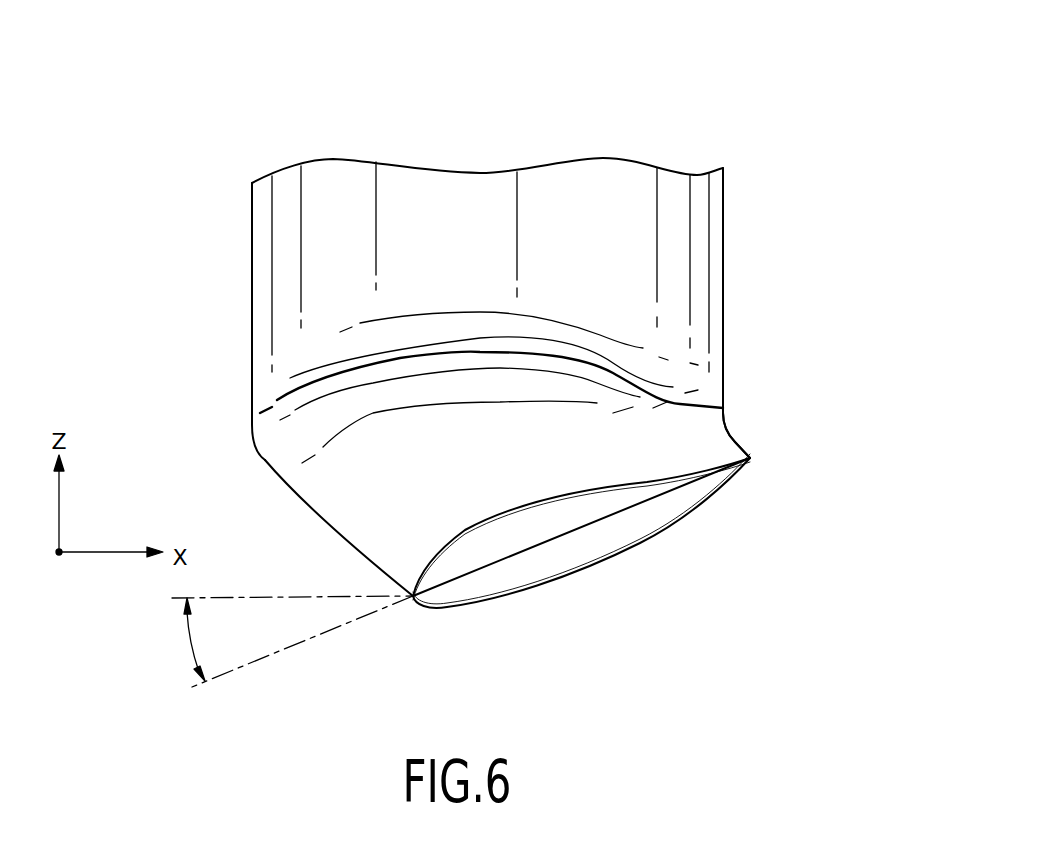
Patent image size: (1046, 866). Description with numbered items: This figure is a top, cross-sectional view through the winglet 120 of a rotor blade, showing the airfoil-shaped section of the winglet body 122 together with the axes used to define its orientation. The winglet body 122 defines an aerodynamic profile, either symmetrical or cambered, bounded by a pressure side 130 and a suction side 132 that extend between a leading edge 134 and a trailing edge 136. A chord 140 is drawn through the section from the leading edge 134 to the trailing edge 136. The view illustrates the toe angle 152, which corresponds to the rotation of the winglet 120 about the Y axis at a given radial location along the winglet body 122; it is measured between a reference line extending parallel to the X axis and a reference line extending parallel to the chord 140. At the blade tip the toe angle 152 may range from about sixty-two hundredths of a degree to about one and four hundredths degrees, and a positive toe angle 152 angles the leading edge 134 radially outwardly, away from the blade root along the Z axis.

The winglet 120 is at (772, 103).
The winglet body 122 is at (242, 209).
The pressure side 130 is at (440, 195).
The suction side 132 is at (500, 602).
The leading edge 134 is at (323, 518).
The trailing edge 136 is at (730, 430).
The chord 140 is at (583, 528).
The toe angle 152 is at (190, 640).